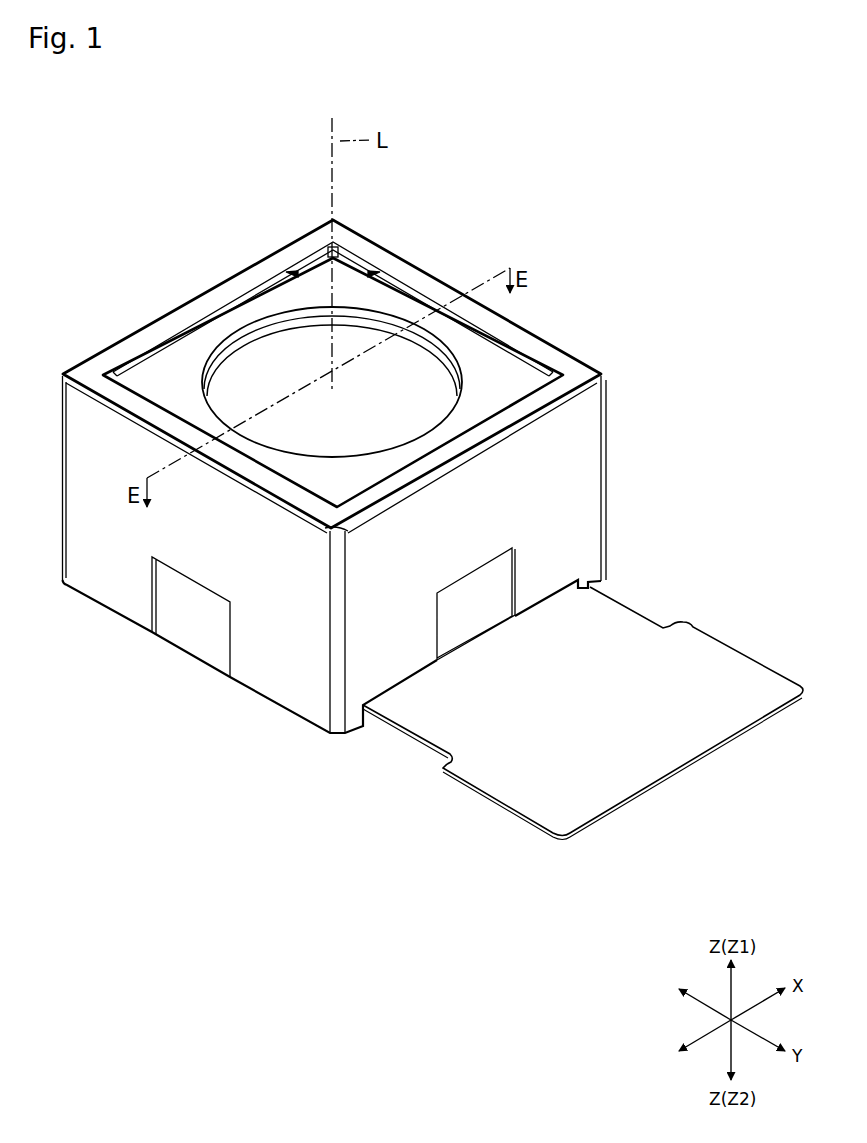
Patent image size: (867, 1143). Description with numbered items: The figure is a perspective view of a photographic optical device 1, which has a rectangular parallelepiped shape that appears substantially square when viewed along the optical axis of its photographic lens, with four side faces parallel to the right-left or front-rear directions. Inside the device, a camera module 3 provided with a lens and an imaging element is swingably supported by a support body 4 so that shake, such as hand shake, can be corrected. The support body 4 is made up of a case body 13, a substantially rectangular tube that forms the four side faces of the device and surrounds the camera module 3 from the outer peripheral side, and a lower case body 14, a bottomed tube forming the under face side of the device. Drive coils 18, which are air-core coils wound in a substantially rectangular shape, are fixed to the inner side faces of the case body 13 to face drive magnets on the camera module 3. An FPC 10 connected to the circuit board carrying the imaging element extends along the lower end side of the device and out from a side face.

The photographic optical device 1 is at (606, 134).
The camera module 3 is at (157, 378).
The support body 4 is at (333, 671).
The FPC 10 is at (487, 795).
The case body 13 is at (248, 680).
The lower case body 14 is at (184, 649).
The drive coil 18 is at (253, 292).